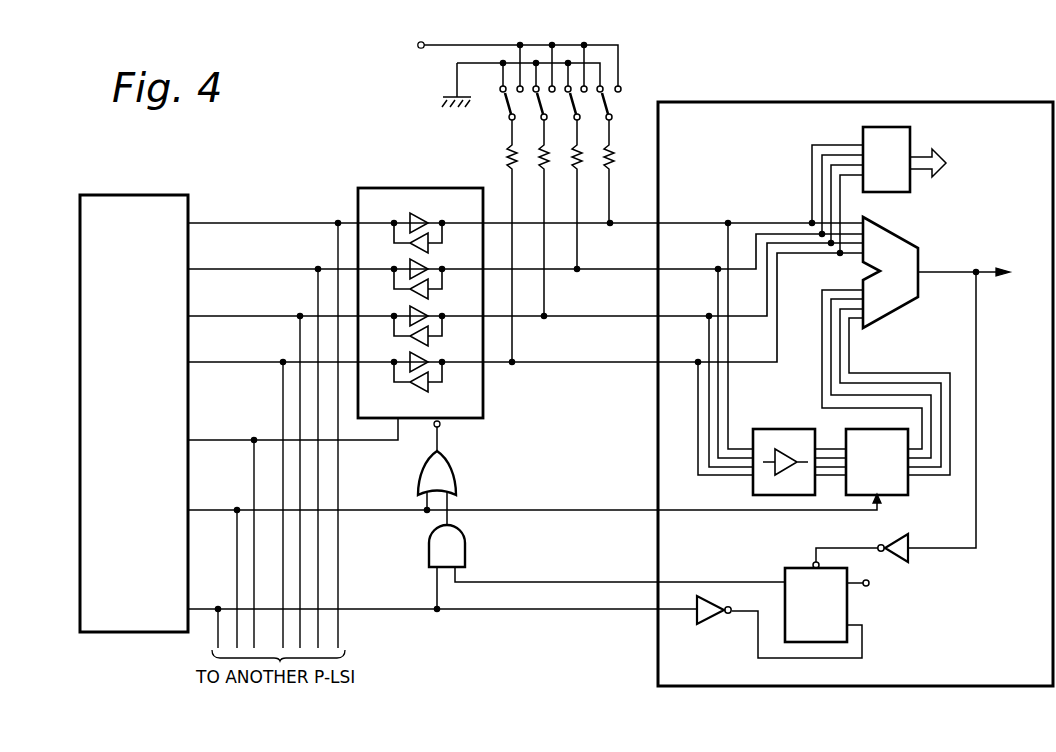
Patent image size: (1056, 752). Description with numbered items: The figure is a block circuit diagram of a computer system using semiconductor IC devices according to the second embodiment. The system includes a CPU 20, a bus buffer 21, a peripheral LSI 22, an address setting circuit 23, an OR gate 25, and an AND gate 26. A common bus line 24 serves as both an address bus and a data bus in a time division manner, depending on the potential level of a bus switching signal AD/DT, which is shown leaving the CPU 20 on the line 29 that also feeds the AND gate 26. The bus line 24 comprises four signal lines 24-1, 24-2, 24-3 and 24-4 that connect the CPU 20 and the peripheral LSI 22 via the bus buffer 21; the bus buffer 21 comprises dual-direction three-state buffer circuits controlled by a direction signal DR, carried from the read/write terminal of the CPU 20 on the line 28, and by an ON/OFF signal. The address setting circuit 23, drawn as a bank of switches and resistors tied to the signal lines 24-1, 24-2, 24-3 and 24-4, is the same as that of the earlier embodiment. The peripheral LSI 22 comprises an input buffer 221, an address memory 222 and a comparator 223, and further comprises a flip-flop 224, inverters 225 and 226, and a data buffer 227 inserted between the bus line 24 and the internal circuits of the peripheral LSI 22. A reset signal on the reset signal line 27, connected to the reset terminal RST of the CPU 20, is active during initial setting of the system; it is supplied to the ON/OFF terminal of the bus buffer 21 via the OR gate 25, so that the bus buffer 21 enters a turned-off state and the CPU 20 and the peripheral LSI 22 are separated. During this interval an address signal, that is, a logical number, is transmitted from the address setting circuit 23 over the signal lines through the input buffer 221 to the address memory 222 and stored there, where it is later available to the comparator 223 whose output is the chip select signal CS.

The CPU 20 is at (105, 633).
The bus buffer 21 is at (377, 188).
The peripheral LSI 22 is at (927, 102).
The address setting circuit 23 is at (588, 44).
The common bus line 24 is at (525, 279).
The signal line 24-1 is at (207, 225).
The signal line 24-2 is at (213, 271).
The signal line 24-3 is at (213, 318).
The signal line 24-4 is at (210, 364).
The OR gate 25 is at (463, 473).
The AND gate 26 is at (470, 552).
The reset signal line 27 is at (209, 509).
The read/write (R/W) line 28 is at (207, 439).
The address/data select (AD/DT) line 29 is at (207, 608).
The input buffer 221 is at (769, 429).
The address memory 222 is at (895, 495).
The comparator 223 is at (904, 241).
The flip-flop 224 is at (849, 606).
The inverter 225 is at (912, 557).
The inverter 226 is at (708, 624).
The data buffer 227 is at (863, 131).